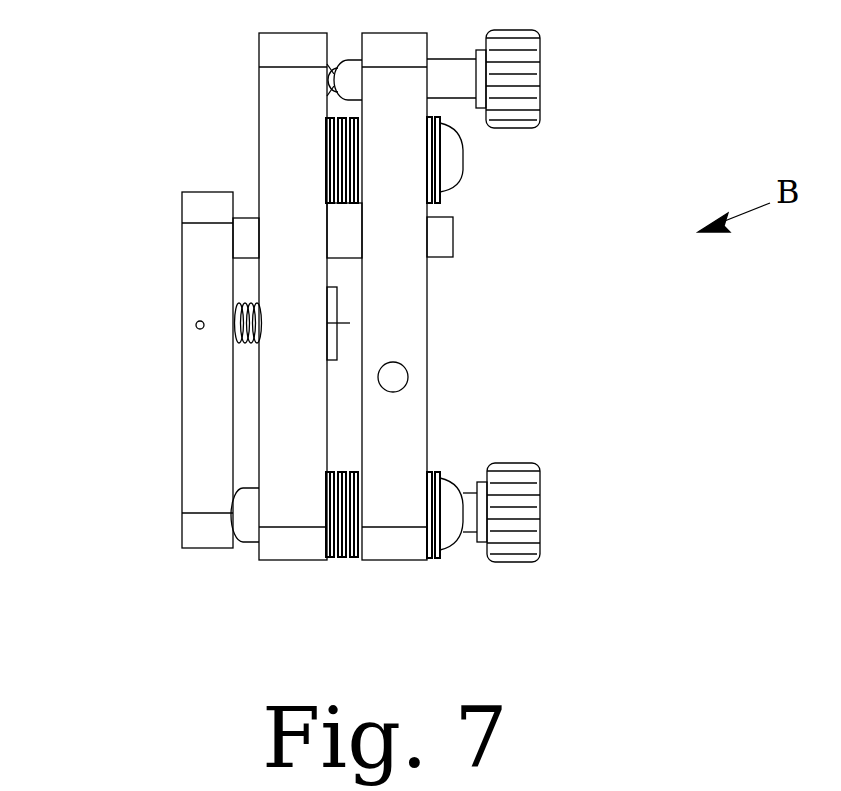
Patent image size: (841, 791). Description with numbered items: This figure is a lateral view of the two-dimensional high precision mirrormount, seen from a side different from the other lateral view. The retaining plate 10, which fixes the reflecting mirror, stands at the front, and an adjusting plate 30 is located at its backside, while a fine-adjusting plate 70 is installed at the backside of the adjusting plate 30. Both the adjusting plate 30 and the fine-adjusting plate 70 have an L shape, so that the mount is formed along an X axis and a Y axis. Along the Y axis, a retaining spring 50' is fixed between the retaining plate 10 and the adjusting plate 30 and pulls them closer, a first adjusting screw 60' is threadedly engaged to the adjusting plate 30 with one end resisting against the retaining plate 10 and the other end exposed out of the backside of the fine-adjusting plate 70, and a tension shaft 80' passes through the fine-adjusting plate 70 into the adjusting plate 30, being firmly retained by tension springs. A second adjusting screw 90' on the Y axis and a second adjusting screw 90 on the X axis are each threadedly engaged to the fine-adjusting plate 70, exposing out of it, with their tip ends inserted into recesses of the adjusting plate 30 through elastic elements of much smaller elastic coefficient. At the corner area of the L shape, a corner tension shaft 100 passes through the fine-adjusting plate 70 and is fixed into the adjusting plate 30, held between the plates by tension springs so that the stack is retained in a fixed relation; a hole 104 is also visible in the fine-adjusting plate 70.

The retaining plate 10 is at (200, 463).
The adjusting plate 30 is at (300, 543).
The retaining spring 50' is at (157, 319).
The first adjusting screw 60' is at (491, 251).
The fine-adjusting plate 70 is at (403, 528).
The tension shaft 80' is at (498, 162).
The second adjusting screw 90' is at (536, 79).
The second adjusting screw 90 is at (548, 512).
The corner tension shaft 100 is at (437, 557).
The aperture 104 is at (387, 375).